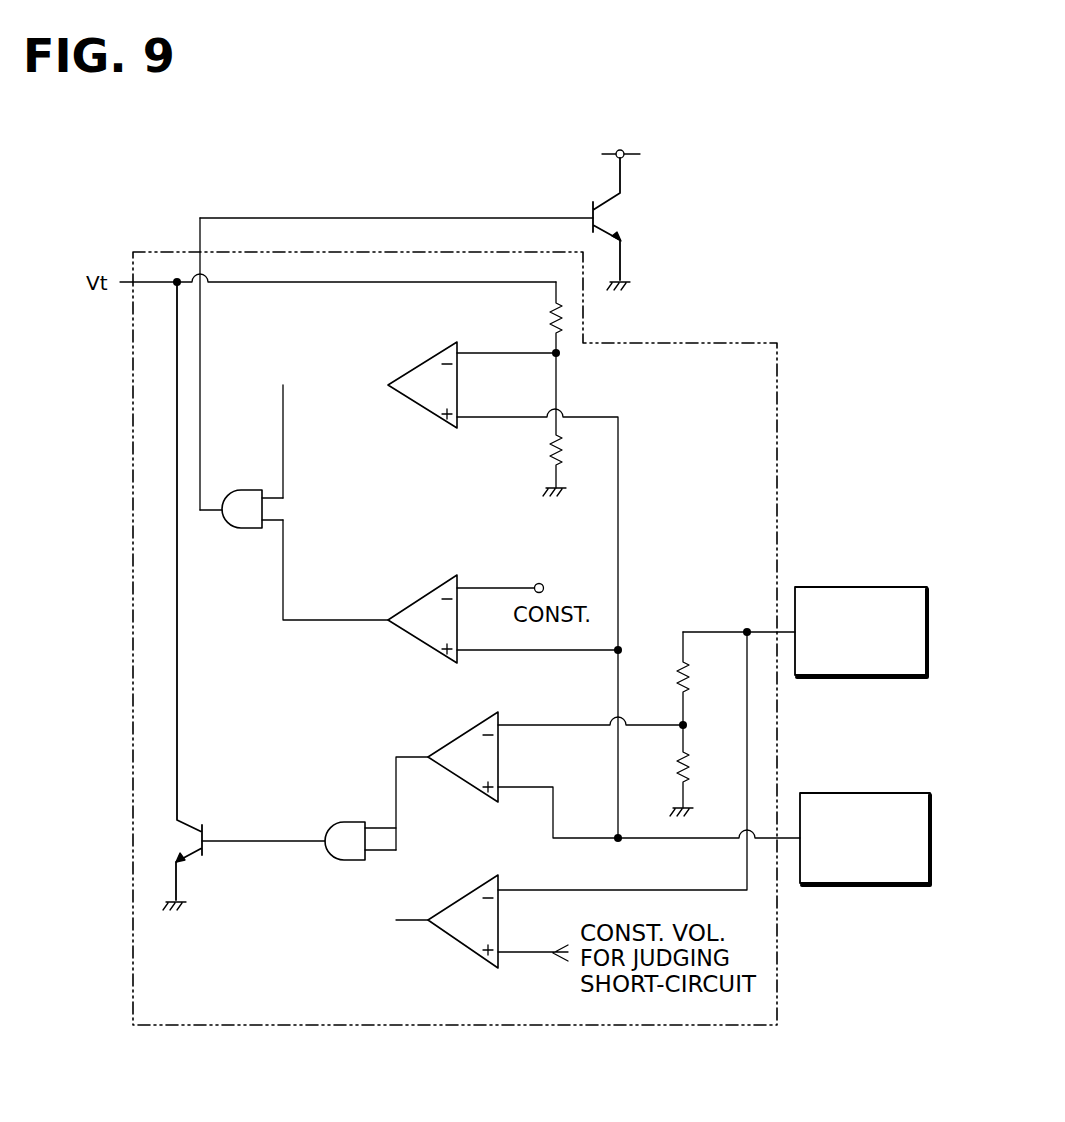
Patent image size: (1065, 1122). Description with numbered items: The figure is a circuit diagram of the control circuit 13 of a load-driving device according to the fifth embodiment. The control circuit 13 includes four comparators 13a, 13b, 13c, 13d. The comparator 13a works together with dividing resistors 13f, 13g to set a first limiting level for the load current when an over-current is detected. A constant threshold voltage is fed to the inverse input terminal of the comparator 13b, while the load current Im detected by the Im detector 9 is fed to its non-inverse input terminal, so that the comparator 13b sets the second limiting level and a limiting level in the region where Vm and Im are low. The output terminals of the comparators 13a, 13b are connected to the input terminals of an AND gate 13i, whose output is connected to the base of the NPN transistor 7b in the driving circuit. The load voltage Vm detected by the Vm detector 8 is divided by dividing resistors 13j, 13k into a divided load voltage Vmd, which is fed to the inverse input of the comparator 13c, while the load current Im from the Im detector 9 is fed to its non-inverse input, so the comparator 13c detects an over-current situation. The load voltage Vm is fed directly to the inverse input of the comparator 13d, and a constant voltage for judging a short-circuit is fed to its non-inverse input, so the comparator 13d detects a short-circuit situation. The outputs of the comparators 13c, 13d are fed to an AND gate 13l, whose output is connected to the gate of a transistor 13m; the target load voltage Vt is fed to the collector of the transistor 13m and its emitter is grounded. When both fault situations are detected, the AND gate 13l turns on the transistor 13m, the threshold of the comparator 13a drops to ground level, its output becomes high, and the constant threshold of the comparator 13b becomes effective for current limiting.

The NPN transistor 7b is at (626, 216).
The Vm detector 8 is at (837, 587).
The Im detector 9 is at (838, 793).
The control circuit 13 is at (735, 343).
The comparator 13a is at (425, 363).
The comparator 13b is at (426, 598).
The comparator 13c is at (463, 734).
The comparator 13d is at (472, 895).
The dividing resistor 13f is at (551, 314).
The dividing resistor 13g is at (563, 447).
The AND gate 13i is at (242, 491).
The dividing resistor 13j is at (695, 673).
The dividing resistor 13k is at (695, 763).
The AND gate 13l is at (347, 823).
The NPN transistor 13m is at (192, 822).